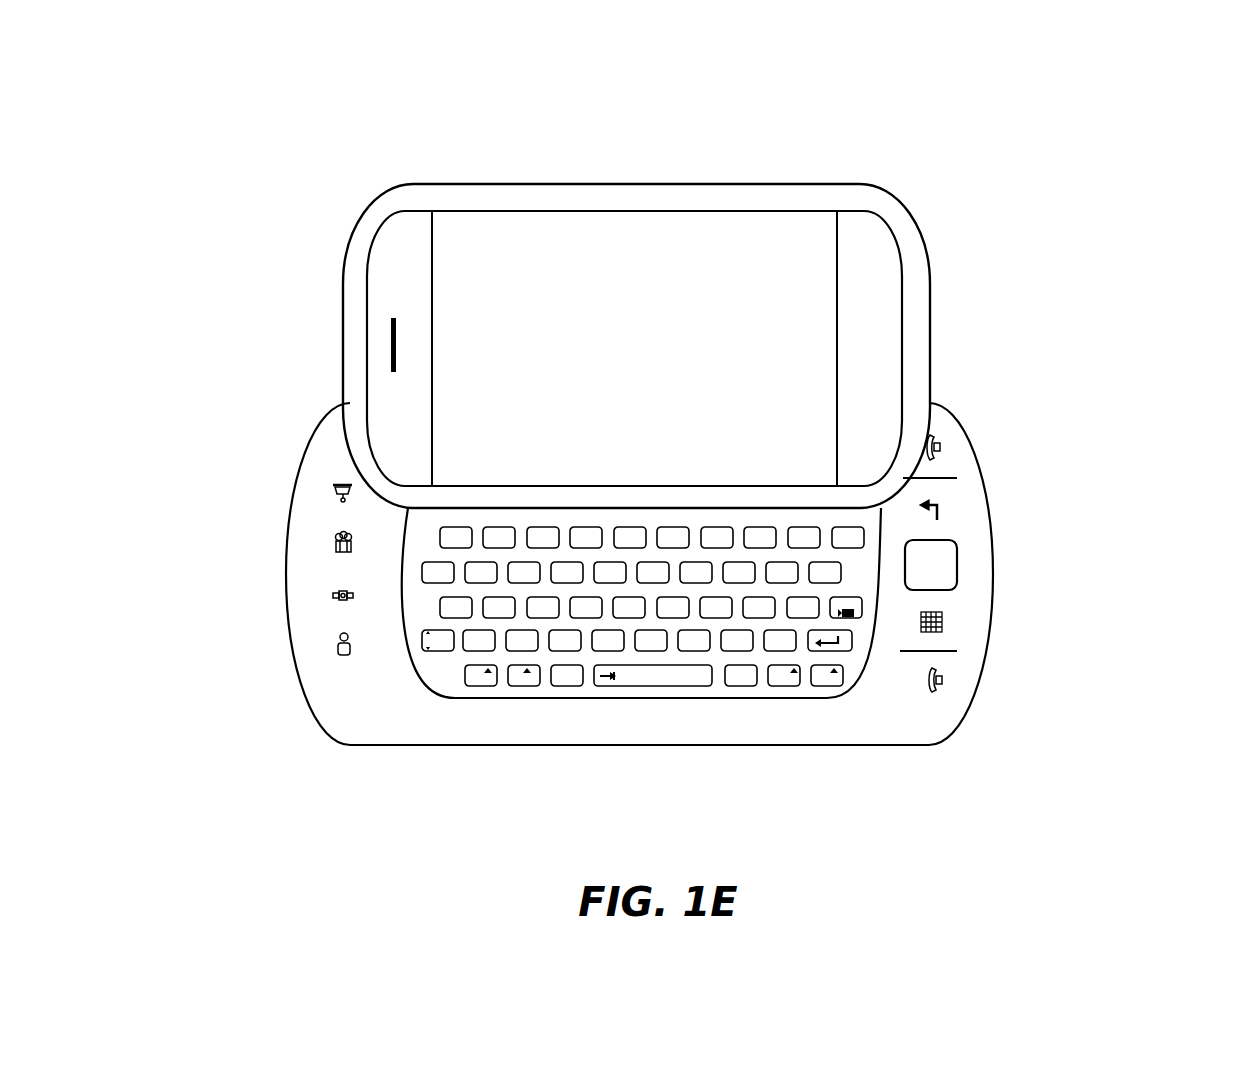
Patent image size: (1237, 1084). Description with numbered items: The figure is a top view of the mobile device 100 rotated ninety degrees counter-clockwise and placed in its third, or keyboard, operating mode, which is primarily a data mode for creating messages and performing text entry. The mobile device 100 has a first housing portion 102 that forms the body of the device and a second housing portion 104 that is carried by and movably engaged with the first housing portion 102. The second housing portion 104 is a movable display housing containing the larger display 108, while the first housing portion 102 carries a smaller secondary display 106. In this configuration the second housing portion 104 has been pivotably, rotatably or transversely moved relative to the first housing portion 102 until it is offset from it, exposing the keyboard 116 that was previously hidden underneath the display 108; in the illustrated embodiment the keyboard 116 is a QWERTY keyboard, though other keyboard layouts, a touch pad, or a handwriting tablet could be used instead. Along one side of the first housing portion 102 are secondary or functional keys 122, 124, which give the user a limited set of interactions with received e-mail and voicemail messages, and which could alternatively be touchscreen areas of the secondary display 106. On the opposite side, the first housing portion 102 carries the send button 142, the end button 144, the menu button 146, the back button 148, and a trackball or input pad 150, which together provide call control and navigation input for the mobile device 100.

The mobile device 100 is at (1060, 240).
The first housing portion 102 is at (461, 745).
The second housing portion 104 is at (913, 240).
The secondary display 106 is at (325, 440).
The display 108 is at (510, 234).
The keyboard 116 is at (688, 680).
The secondary or functional key 122 is at (296, 656).
The secondary or functional key 124 is at (288, 598).
The send button 142 is at (948, 680).
The end button 144 is at (943, 447).
The menu button 146 is at (946, 625).
The back button 148 is at (940, 513).
The trackball or input pad 150 is at (958, 568).